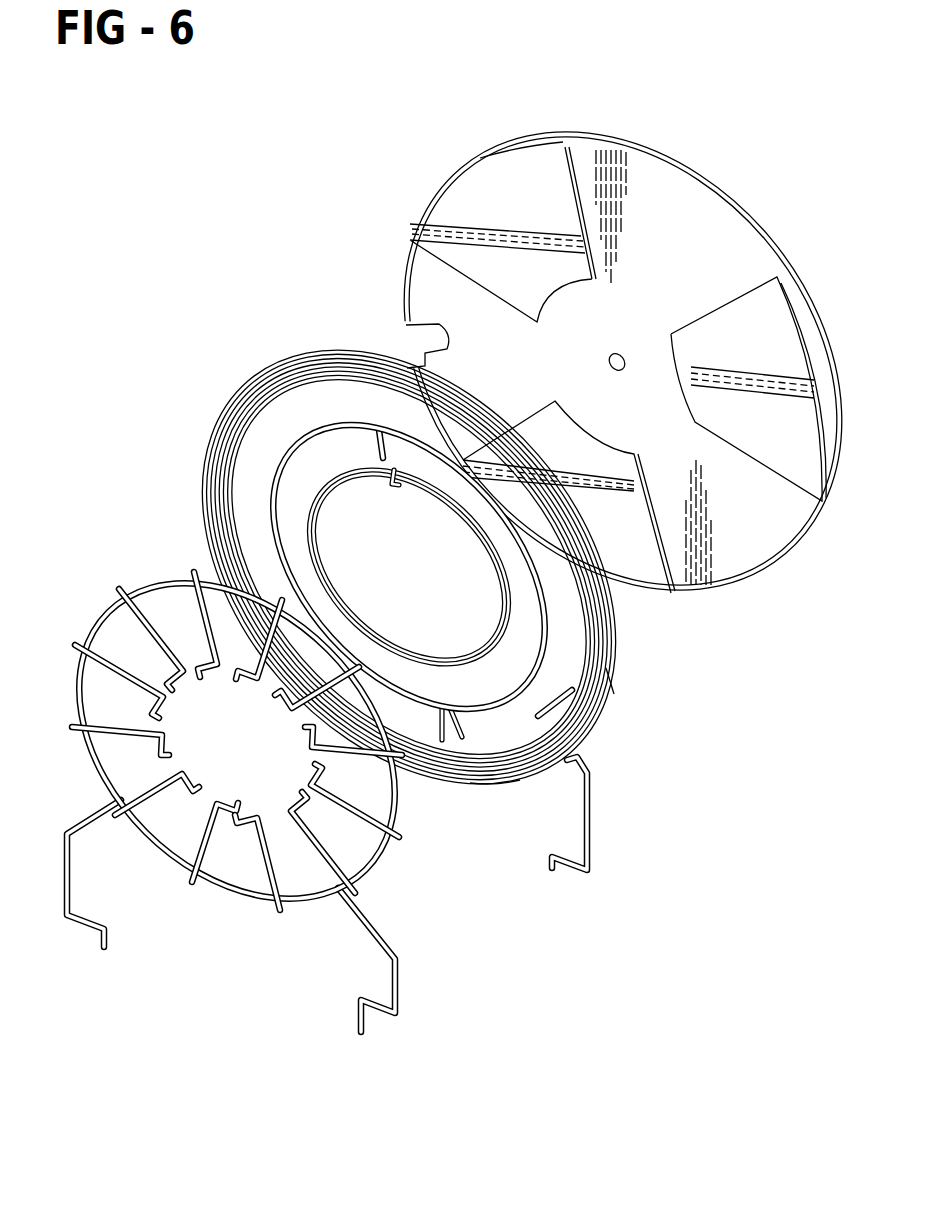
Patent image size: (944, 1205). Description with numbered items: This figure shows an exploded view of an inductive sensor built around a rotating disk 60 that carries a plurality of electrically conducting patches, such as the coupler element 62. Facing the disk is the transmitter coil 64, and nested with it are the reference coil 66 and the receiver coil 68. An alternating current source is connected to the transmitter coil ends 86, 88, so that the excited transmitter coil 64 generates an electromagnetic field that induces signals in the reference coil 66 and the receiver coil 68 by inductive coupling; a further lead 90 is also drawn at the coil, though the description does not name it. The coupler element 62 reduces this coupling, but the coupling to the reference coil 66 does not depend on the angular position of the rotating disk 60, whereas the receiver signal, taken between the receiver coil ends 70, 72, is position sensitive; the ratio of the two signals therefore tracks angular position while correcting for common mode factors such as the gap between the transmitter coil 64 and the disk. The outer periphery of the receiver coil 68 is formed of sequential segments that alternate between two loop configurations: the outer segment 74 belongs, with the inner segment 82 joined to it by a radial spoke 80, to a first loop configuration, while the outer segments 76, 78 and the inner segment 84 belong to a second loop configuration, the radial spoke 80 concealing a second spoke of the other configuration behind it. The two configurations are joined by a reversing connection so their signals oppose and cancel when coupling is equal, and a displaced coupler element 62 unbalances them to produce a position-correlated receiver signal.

The rotating disk 60 is at (604, 139).
The coupler element 62 is at (743, 308).
The transmitter coil 64 is at (312, 350).
The reference coil 66 is at (545, 632).
The receiver coil 68 is at (399, 797).
The receiver coil end 70 is at (105, 947).
The receiver coil end 72 is at (362, 1033).
The outer segment 74 is at (92, 625).
The outer segment 76 is at (158, 574).
The outer segment 78 is at (78, 710).
The radial spoke 80 is at (133, 738).
The inner segment 82 is at (167, 717).
The inner segment 84 is at (173, 757).
The transmitter coil end 86 is at (603, 680).
The transmitter coil end 88 is at (590, 805).
The lead wire 90 is at (493, 787).